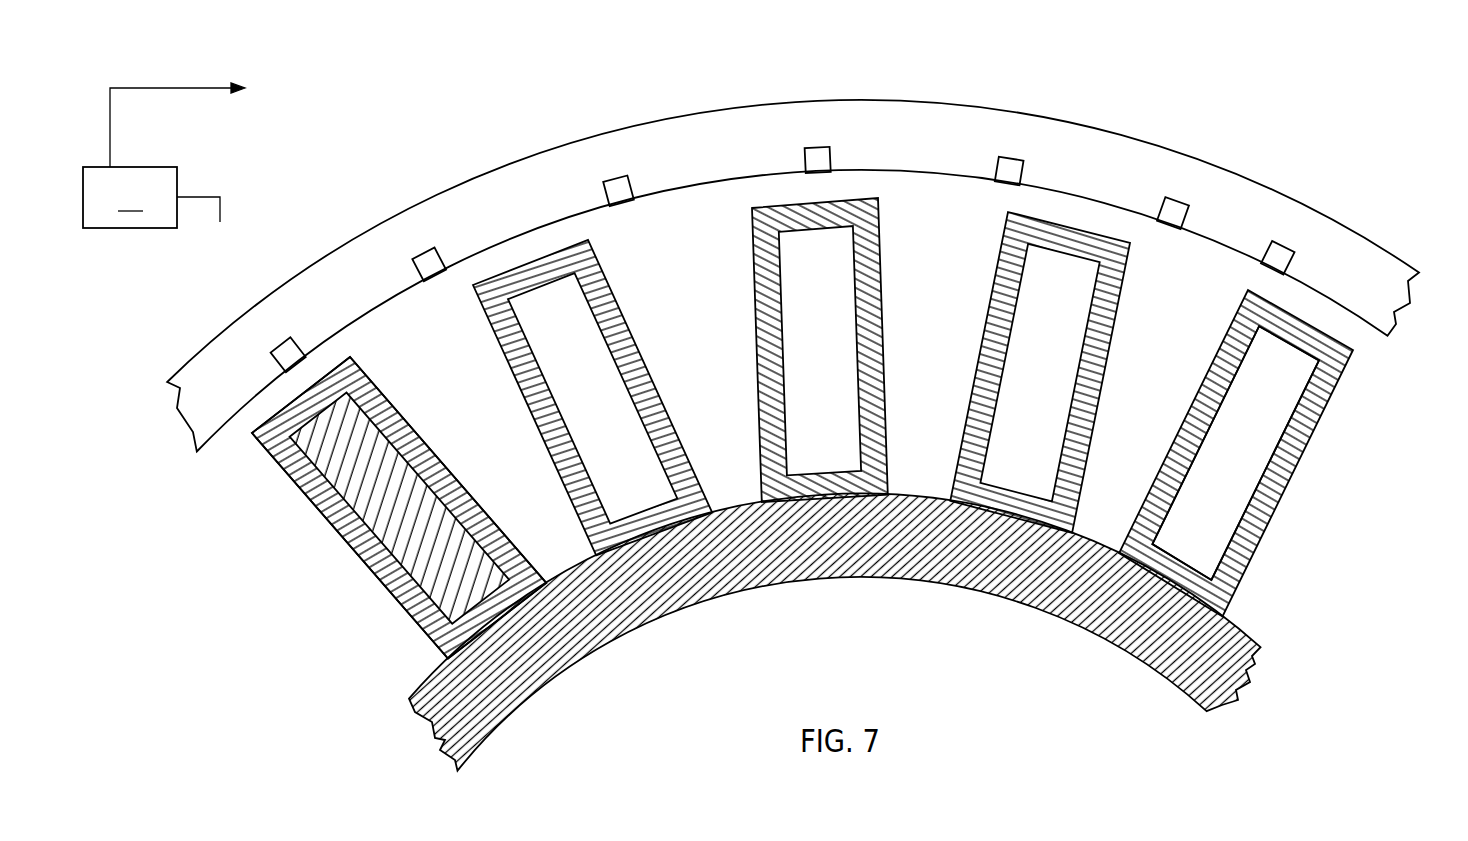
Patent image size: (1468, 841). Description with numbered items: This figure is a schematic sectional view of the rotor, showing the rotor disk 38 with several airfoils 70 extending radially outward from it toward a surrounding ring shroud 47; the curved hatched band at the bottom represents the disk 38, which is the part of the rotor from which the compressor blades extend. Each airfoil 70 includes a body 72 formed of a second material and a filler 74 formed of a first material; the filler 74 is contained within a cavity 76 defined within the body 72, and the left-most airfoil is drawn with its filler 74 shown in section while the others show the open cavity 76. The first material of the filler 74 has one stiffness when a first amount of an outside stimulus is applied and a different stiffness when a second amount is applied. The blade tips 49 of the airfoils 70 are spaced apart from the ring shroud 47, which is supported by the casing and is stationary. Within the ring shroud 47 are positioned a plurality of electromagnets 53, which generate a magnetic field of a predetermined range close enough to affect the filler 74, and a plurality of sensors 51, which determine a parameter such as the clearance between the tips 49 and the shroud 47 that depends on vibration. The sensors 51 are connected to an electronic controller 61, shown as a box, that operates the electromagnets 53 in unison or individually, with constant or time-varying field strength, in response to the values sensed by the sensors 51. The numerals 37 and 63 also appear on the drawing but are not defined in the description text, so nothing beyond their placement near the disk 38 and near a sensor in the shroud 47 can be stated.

The rotor core 37 is at (1233, 672).
The disk 38 is at (1105, 680).
The ring shroud 47 is at (1383, 250).
The blade tip 49 is at (352, 356).
The sensors 51 is at (284, 340).
The electromagnets 53 is at (425, 252).
The electronic controller 61 is at (612, 66).
The sensor 63 is at (1193, 196).
The airfoil 70 is at (296, 494).
The body 72 is at (386, 590).
The filler 74 is at (356, 508).
The cavity 76 is at (1288, 428).